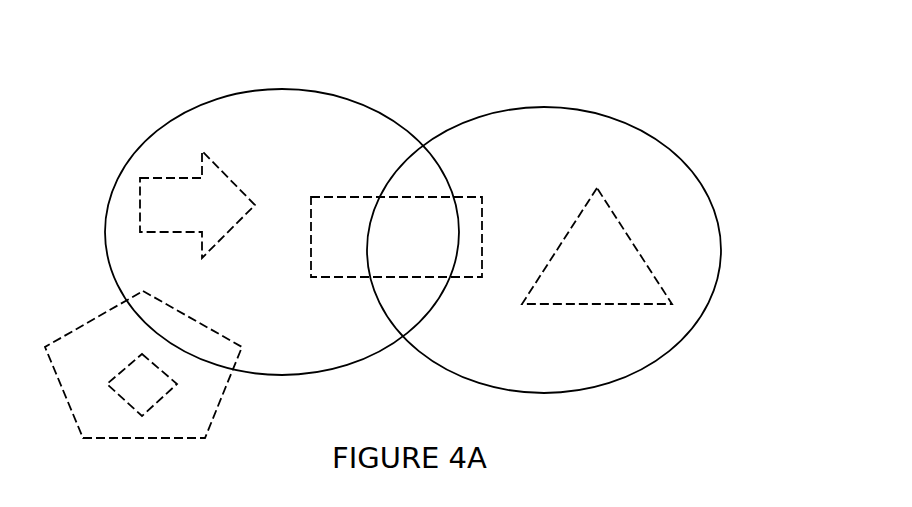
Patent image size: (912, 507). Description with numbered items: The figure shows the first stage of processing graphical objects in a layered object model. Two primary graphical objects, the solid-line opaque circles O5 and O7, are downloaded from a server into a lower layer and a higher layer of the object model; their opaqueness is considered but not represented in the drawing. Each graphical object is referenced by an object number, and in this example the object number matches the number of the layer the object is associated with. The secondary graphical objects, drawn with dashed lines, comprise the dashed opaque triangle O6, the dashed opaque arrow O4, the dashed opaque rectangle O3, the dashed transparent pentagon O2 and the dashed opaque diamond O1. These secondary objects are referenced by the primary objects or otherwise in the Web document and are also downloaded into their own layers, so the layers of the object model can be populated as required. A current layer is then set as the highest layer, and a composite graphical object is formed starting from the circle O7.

The dashed opaque diamond O1 is at (173, 394).
The dashed transparent pentagon O2 is at (98, 318).
The dashed opaque rectangle O3 is at (351, 196).
The dashed opaque arrow O4 is at (233, 185).
The solid line opaque circle O5 is at (255, 88).
The dashed opaque triangle O6 is at (598, 188).
The solid line opaque circle O7 is at (670, 137).